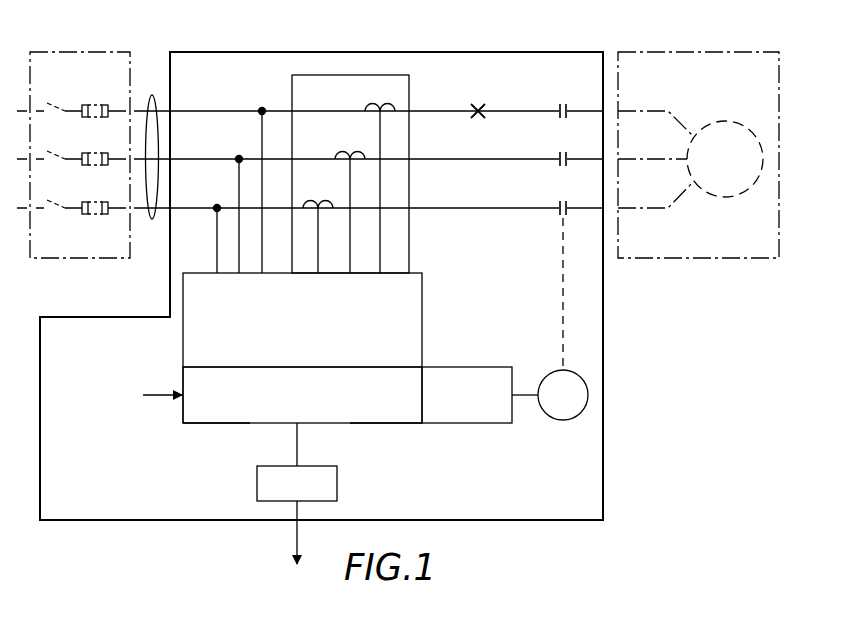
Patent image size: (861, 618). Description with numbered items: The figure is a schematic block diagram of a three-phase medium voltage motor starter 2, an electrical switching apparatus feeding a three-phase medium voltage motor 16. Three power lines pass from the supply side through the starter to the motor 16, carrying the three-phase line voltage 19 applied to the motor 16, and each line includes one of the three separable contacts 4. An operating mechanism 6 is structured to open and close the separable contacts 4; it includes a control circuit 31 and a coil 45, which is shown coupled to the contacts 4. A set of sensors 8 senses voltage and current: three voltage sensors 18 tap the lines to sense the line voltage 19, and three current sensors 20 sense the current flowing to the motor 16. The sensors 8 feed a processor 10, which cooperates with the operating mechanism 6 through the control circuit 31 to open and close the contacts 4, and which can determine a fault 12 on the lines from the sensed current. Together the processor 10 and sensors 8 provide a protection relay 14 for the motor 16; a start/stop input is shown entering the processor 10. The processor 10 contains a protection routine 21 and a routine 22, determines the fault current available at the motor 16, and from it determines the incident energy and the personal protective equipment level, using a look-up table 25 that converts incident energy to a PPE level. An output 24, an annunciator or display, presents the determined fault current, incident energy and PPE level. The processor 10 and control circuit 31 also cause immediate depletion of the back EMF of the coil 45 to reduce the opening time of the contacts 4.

The three-phase medium voltage motor starter 2 is at (603, 372).
The separable contacts 4 is at (558, 106).
The operating mechanism 6 is at (578, 433).
The sensors 8 is at (422, 318).
The processor 10 is at (347, 425).
The fault 12 is at (478, 104).
The protection relay 14 is at (162, 430).
The three-phase medium voltage motor 16 is at (706, 195).
The voltage sensors 18 is at (240, 307).
The three-phase line voltage 19 is at (152, 97).
The current sensors 20 is at (409, 242).
The protection routine 21 is at (195, 414).
The routine 22 is at (225, 414).
The output 24 is at (337, 490).
The look-up table 25 is at (388, 410).
The control circuit 31 is at (453, 425).
The coil 45 is at (552, 418).